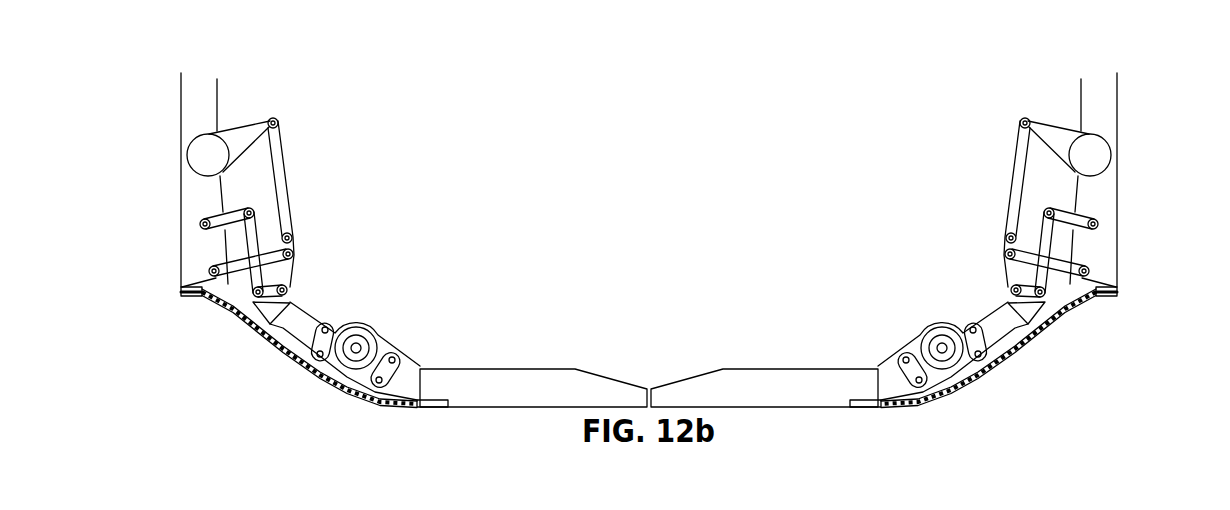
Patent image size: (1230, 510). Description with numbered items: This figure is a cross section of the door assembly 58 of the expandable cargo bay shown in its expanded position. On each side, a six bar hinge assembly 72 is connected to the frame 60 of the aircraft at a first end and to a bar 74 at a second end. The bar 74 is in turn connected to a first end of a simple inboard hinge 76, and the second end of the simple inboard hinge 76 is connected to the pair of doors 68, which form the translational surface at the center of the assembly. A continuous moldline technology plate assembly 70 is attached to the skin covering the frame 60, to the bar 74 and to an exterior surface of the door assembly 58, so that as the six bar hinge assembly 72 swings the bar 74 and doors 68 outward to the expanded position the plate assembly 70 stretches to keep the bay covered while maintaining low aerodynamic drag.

The door assembly 58 is at (661, 73).
The frame 60 is at (195, 74).
The pair of doors 68 is at (743, 368).
The continuous moldline technology (CMT) plate assembly 70 is at (215, 295).
The six bar hinge assembly 72 is at (283, 166).
The bar 74 is at (308, 296).
The simple inboard hinge 76 is at (362, 325).